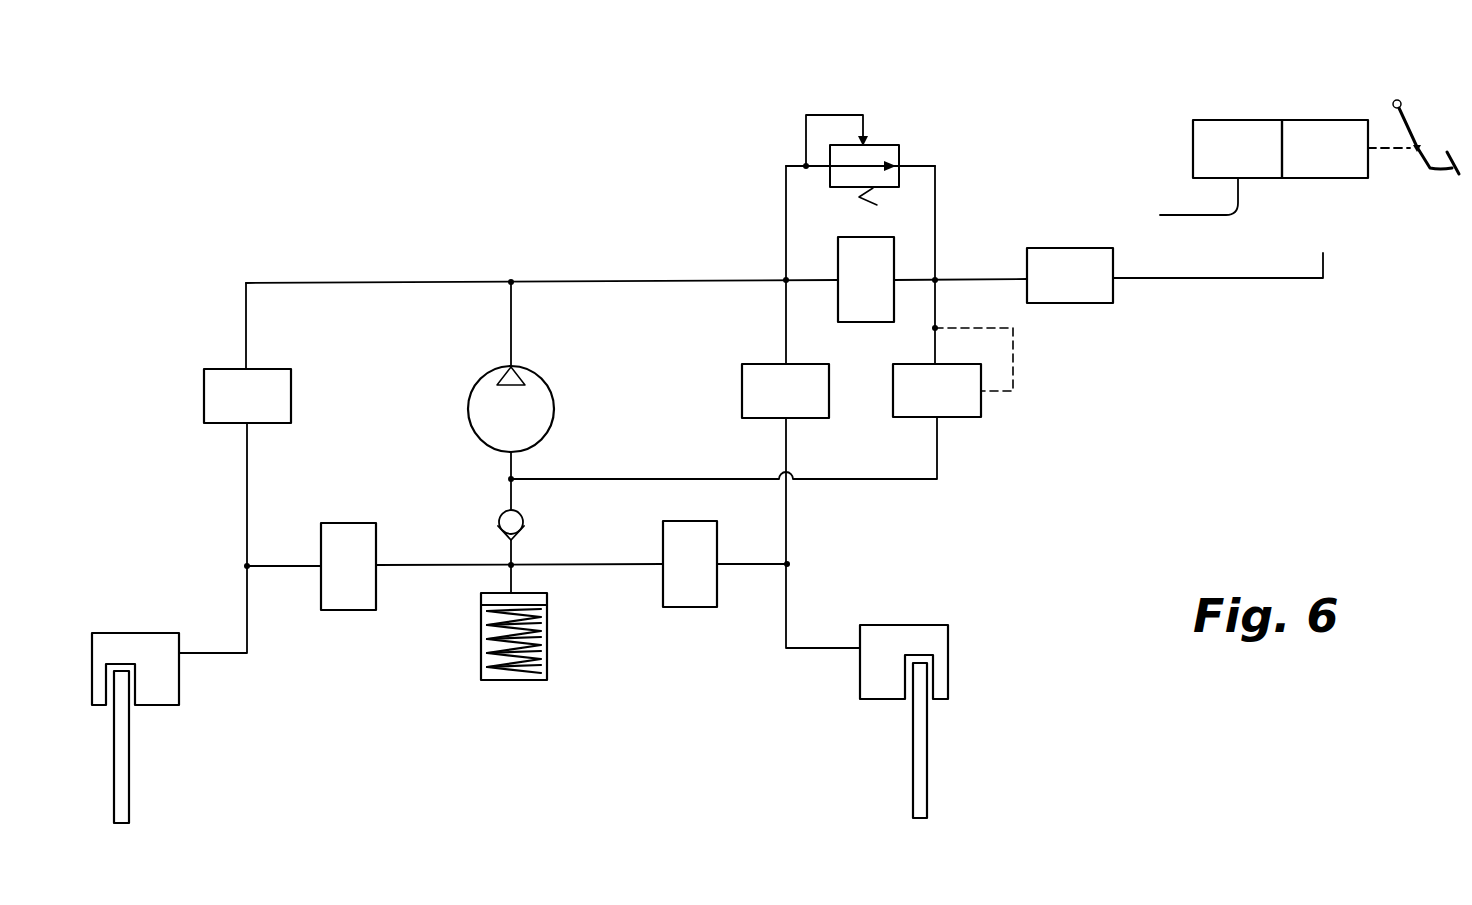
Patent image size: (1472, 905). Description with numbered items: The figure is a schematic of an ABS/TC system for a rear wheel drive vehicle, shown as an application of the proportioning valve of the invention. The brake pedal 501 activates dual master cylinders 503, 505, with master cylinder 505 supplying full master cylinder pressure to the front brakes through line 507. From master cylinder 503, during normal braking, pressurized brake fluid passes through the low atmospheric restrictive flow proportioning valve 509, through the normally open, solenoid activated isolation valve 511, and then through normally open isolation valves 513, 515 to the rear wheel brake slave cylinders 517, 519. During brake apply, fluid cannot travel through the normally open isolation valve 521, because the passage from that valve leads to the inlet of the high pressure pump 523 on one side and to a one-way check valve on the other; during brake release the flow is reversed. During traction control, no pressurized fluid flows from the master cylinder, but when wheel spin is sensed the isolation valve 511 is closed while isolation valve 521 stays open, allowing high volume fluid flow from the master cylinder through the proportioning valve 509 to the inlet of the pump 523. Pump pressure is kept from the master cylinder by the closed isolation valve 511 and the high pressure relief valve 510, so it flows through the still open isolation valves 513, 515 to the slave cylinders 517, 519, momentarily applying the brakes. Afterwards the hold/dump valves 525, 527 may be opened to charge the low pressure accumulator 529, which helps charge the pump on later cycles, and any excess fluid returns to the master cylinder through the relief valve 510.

The brake pedal 501 is at (1453, 170).
The master cylinder 503 is at (1320, 120).
The master cylinder 505 is at (1240, 120).
The line 507 is at (1160, 215).
The proportioning valve 509 is at (1102, 303).
The high pressure relief valve 510 is at (830, 152).
The isolation valve 511 is at (894, 252).
The isolation valve 513 is at (754, 364).
The isolation valve 515 is at (204, 369).
The rear wheel brake slave cylinder 517 is at (179, 684).
The rear wheel brake slave cylinder 519 is at (860, 687).
The isolation valve 521 is at (975, 417).
The high pressure pump 523 is at (554, 412).
The hold/dump valve 525 is at (376, 595).
The hold/dump valve 527 is at (663, 585).
The low pressure accumulator 529 is at (547, 667).